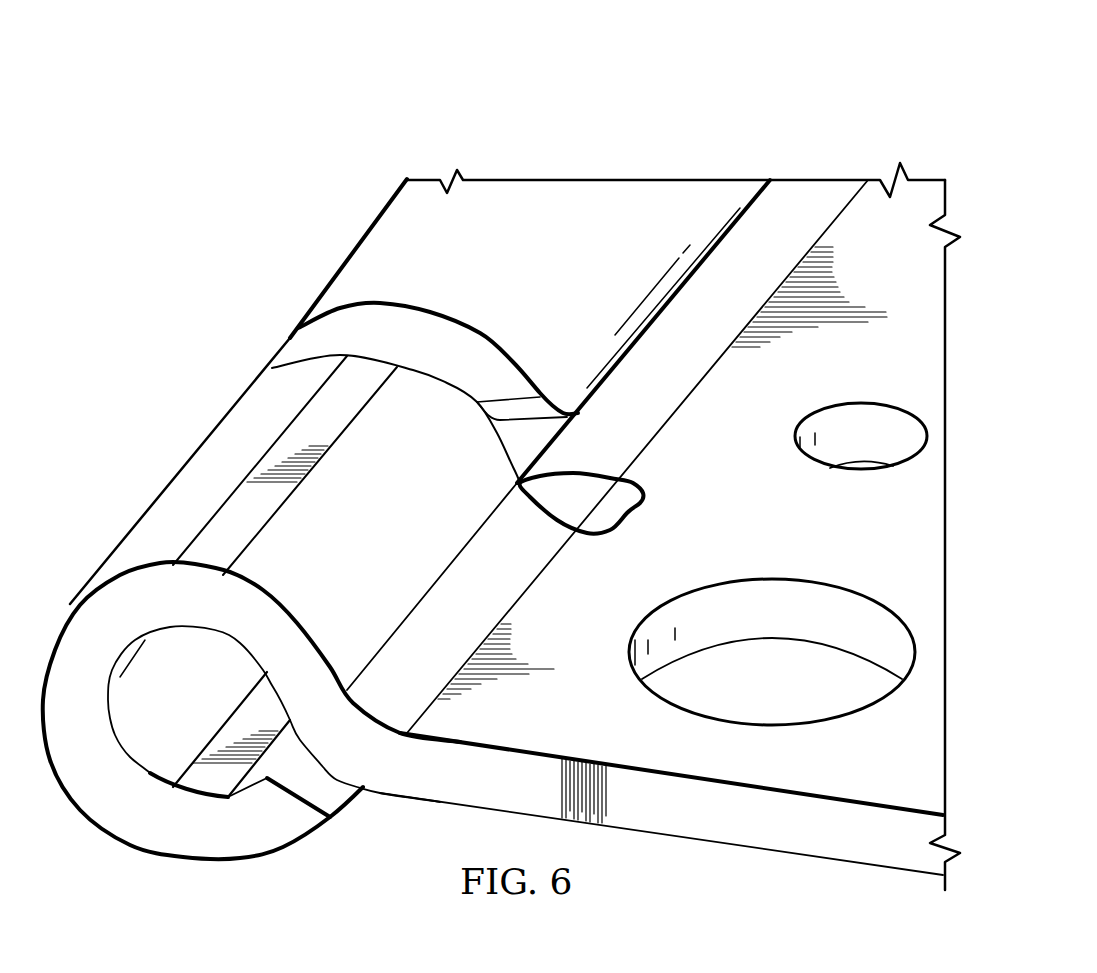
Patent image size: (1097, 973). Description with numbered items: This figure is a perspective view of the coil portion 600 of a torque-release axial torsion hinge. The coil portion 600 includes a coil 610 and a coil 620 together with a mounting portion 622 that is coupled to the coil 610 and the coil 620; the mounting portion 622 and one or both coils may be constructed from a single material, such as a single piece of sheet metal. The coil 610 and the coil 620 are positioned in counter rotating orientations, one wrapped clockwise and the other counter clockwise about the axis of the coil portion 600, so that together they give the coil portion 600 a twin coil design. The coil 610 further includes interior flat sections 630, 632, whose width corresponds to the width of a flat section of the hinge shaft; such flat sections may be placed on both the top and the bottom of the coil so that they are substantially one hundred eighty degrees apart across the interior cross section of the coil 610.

The coil portion 600 is at (636, 92).
The coil 610 is at (187, 462).
The coil 620 is at (366, 236).
The mounting portion 622 is at (763, 831).
The interior flat section 630 is at (197, 632).
The interior flat section 632 is at (212, 777).